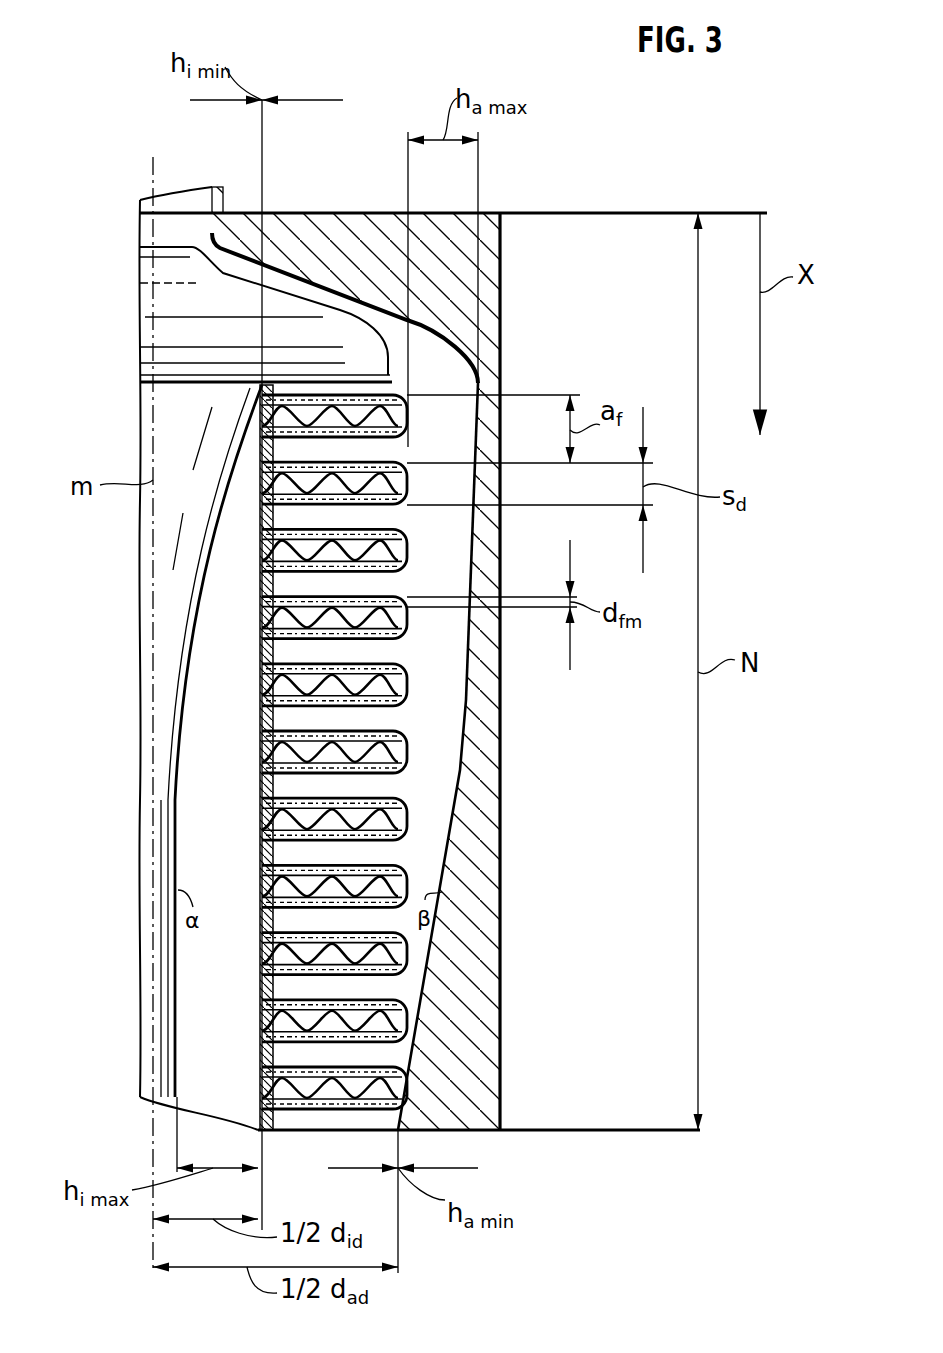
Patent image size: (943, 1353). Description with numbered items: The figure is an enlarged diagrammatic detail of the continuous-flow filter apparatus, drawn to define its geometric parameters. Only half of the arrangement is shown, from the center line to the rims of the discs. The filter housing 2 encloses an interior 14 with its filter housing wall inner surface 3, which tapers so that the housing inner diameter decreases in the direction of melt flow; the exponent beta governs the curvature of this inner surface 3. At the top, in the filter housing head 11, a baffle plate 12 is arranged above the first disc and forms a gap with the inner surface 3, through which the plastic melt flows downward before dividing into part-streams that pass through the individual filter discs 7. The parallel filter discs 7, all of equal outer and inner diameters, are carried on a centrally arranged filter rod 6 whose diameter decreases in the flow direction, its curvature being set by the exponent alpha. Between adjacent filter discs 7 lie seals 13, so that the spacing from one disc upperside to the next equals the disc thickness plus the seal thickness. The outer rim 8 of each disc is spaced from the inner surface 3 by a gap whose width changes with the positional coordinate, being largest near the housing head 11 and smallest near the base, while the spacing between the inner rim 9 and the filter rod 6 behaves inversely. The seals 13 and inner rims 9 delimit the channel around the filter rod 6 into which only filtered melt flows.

The filter housing 2 is at (482, 1040).
The filter housing wall inner surface 3 is at (473, 433).
The filter rod 6 is at (177, 632).
The filter discs 7 is at (407, 553).
The outer rim 8 is at (408, 682).
The inner rim 9 is at (258, 1023).
The filter housing head 11 is at (485, 273).
The baffle plate 12 is at (265, 300).
The seals 13 is at (260, 715).
The interior 14 is at (427, 790).